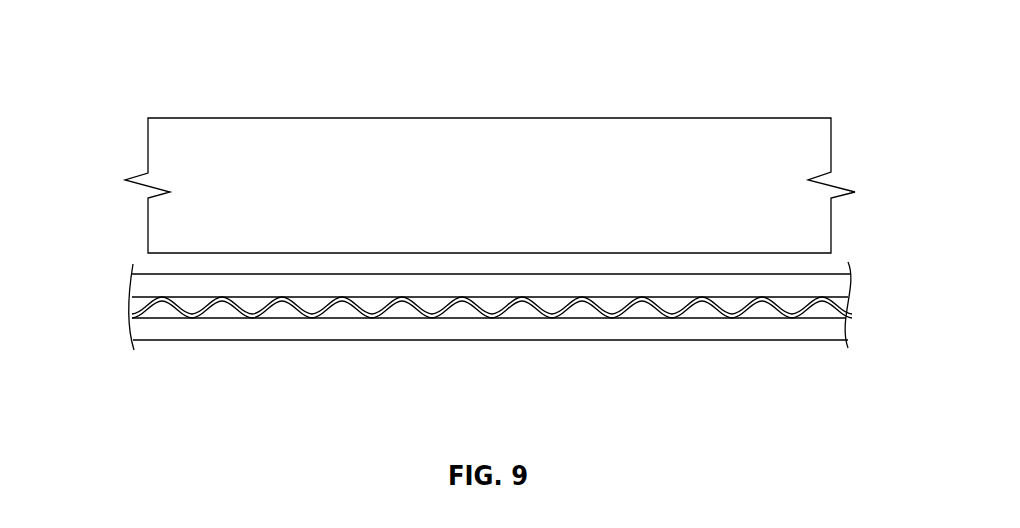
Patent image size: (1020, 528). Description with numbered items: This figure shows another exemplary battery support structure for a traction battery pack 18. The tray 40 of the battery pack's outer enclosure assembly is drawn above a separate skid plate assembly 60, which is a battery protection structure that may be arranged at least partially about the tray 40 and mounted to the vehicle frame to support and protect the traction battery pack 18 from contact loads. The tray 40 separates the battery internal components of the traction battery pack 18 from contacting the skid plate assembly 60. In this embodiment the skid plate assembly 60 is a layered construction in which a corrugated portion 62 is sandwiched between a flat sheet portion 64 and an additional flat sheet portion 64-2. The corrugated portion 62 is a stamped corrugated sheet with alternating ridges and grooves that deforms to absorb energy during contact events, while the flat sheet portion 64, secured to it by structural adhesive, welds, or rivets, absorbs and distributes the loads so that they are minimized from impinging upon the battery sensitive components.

The traction battery pack 18 is at (244, 96).
The tray 40 is at (822, 156).
The skid plate assembly 60 is at (104, 312).
The flat sheet portion 64 is at (832, 288).
The corrugated portion 62 is at (718, 318).
The additional flat sheet portion 64-2 is at (802, 328).